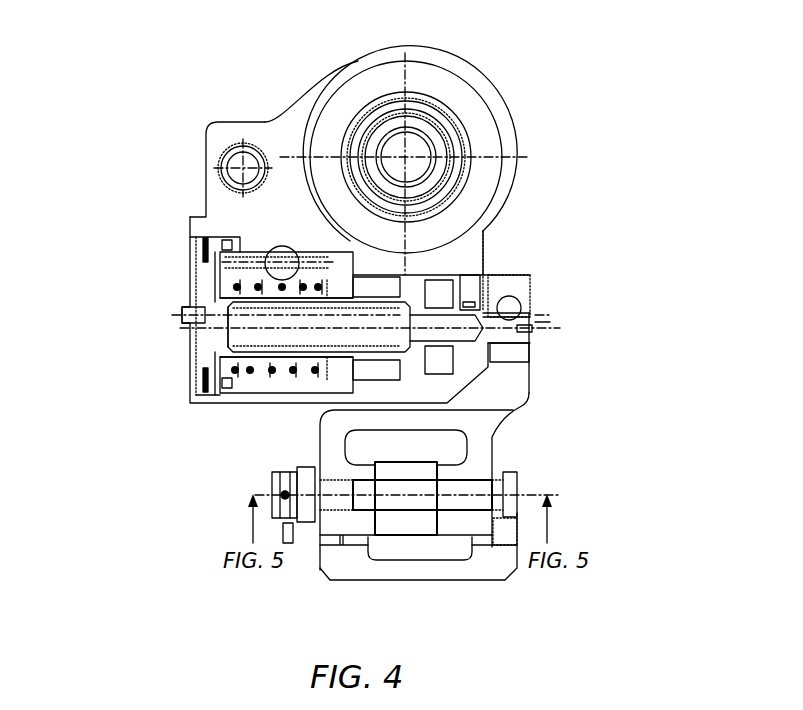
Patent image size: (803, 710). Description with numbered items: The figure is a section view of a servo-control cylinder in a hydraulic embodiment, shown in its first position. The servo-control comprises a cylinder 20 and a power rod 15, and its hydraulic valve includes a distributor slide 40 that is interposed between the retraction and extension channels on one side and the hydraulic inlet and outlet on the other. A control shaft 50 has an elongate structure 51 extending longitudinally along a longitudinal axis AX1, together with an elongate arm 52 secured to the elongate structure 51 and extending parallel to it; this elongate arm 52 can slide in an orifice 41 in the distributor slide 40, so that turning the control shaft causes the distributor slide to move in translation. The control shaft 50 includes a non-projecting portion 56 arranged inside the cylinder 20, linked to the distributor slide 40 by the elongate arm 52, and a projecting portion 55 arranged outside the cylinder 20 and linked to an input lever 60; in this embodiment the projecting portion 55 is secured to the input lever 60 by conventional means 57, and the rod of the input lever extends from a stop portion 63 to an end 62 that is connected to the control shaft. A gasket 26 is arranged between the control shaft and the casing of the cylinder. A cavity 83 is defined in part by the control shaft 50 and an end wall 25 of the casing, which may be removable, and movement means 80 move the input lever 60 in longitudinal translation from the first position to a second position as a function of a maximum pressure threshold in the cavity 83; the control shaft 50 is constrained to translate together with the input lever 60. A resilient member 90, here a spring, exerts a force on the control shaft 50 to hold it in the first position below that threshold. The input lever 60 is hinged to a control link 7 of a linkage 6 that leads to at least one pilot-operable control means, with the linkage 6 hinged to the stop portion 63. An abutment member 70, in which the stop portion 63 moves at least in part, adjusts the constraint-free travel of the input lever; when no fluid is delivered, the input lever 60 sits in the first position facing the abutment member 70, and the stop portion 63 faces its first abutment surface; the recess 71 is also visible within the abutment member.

The power rod 15 is at (500, 98).
The cylinder 20 is at (413, 45).
The distributor slide 40 is at (275, 250).
The end wall 25 is at (207, 267).
The elongate arm 52 is at (252, 255).
The resilient member 90 is at (312, 373).
The cavity 83 is at (237, 332).
The movement means 80 is at (215, 352).
The control shaft 50 is at (262, 357).
The non-projecting portion 56 is at (343, 353).
The elongate structure 51 is at (473, 300).
The gasket 26 is at (484, 303).
The conventional means 57 is at (508, 297).
The end 62 is at (528, 292).
The projecting portion 55 is at (545, 338).
The orifice 41 is at (530, 375).
The input lever 60 is at (513, 410).
The linkage 6 is at (490, 443).
The control link 7 is at (397, 527).
The recess 71 is at (375, 550).
The abutment member 70 is at (480, 570).
The stop portion 63 is at (325, 523).
The longitudinal axis AX1 is at (162, 322).